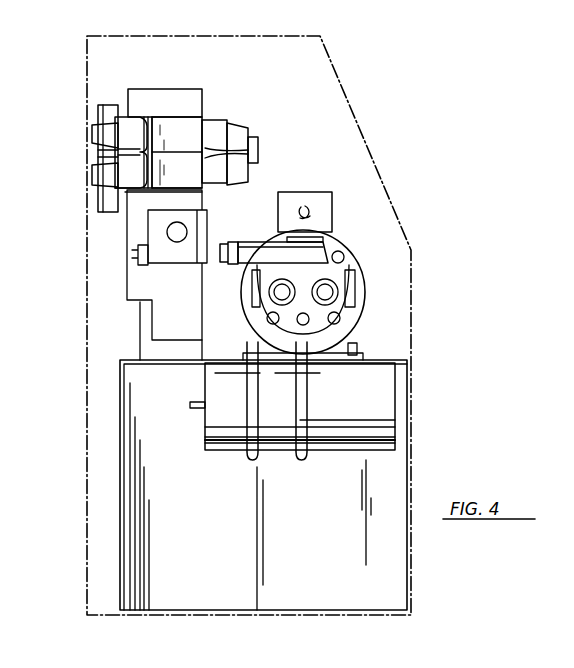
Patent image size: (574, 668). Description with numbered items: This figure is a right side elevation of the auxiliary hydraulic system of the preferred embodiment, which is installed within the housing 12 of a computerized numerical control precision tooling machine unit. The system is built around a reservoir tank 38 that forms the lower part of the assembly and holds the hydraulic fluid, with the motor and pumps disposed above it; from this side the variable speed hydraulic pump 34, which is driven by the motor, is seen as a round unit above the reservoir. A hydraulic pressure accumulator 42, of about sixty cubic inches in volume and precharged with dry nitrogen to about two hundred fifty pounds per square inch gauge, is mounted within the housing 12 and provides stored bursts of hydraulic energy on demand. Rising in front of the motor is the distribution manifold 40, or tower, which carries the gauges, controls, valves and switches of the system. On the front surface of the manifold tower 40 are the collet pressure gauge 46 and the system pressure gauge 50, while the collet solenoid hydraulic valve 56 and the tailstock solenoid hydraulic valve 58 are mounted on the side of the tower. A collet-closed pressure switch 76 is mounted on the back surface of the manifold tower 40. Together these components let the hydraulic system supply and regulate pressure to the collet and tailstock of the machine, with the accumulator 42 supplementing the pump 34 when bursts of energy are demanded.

The housing 12 is at (86, 322).
The variable speed hydraulic pump 34 is at (347, 253).
The reservoir tank 38 is at (122, 467).
The distribution manifold 40 is at (176, 88).
The hydraulic pressure accumulator 42 is at (388, 413).
The collet pressure gauge 46 is at (100, 112).
The system pressure gauge 50 is at (102, 199).
The collet solenoid hydraulic valve 56 is at (178, 127).
The tailstock solenoid hydraulic valve 58 is at (182, 172).
The collet-closed pressure switch 76 is at (262, 152).